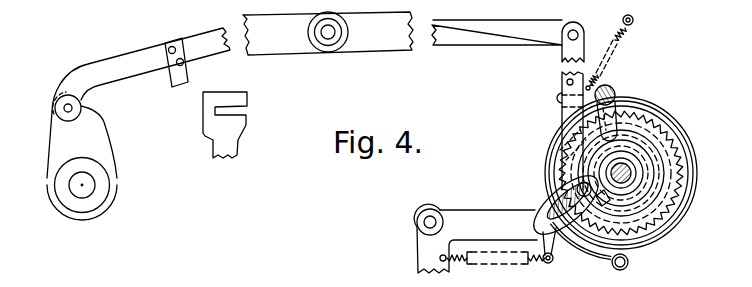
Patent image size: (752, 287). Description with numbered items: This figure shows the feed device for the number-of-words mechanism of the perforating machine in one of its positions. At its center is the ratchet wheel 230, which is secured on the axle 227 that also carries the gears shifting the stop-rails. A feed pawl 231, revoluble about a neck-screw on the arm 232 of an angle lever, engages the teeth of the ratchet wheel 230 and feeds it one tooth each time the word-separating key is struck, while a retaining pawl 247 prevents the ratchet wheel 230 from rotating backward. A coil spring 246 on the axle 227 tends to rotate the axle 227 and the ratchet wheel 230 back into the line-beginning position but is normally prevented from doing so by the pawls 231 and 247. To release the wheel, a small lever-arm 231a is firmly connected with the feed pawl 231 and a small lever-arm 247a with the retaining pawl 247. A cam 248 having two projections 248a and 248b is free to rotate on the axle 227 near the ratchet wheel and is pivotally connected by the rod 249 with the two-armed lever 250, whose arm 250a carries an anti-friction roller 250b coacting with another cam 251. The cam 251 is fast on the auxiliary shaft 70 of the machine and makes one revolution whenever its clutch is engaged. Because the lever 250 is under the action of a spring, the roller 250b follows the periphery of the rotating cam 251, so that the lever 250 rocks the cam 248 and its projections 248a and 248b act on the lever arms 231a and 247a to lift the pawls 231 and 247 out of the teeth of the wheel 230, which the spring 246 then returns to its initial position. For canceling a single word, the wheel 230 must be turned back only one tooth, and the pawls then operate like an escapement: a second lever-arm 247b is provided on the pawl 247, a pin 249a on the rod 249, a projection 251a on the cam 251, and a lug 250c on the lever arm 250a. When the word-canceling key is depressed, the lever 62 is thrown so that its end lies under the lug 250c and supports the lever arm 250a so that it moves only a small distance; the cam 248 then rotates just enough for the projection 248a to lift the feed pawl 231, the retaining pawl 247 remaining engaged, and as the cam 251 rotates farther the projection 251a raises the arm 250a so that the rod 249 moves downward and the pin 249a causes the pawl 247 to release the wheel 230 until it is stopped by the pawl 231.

The two-armed lever 250 is at (370, 47).
The lever arm 250a is at (145, 70).
The anti-friction roller 250b is at (83, 106).
The lug 250c is at (188, 75).
The cam 251 is at (98, 146).
The projection 251a is at (103, 120).
The auxiliary shaft 70 is at (87, 187).
The lever 62 is at (213, 143).
The rod 249 is at (555, 112).
The pin 249a is at (570, 80).
The retaining pawl 247 is at (640, 102).
The lever-arm 247a is at (617, 96).
The second lever-arm 247b is at (560, 95).
The cam 248 is at (641, 195).
The projection 248a is at (607, 202).
The projection 248b is at (568, 137).
The ratchet wheel 230 is at (655, 132).
The axle 227 is at (631, 171).
The coil spring 246 is at (672, 210).
The arm 232 is at (468, 215).
The feed pawl 231 is at (543, 208).
The lever-arm 231a is at (573, 238).